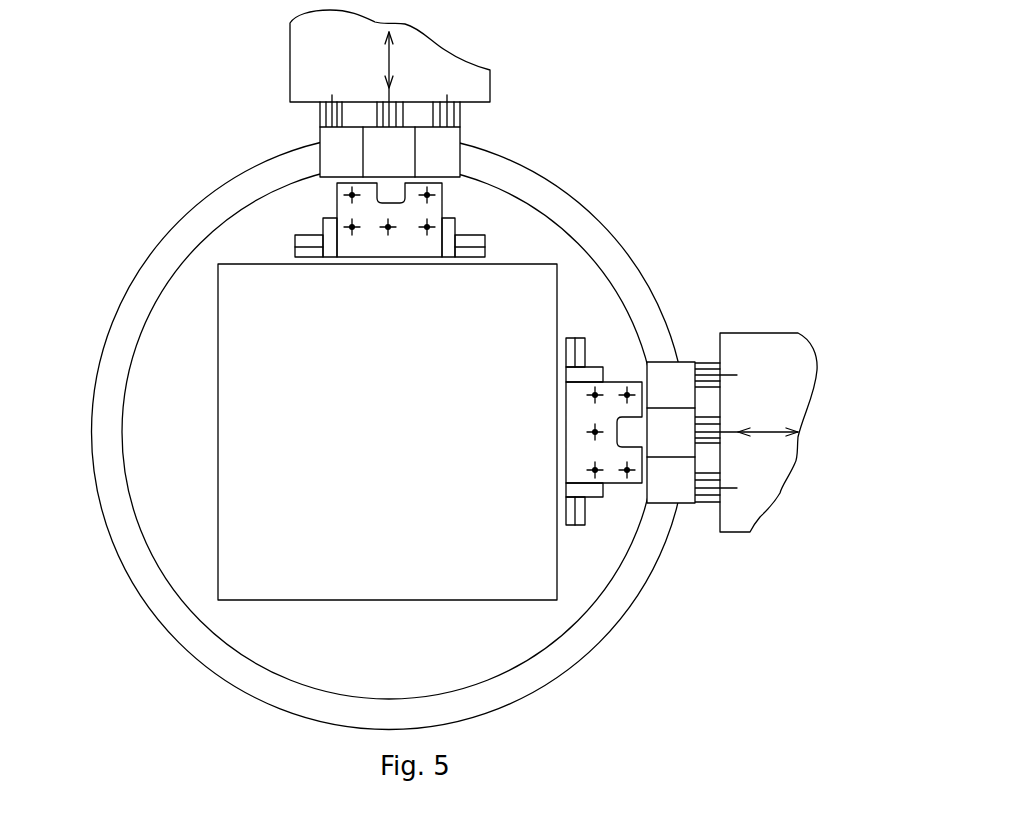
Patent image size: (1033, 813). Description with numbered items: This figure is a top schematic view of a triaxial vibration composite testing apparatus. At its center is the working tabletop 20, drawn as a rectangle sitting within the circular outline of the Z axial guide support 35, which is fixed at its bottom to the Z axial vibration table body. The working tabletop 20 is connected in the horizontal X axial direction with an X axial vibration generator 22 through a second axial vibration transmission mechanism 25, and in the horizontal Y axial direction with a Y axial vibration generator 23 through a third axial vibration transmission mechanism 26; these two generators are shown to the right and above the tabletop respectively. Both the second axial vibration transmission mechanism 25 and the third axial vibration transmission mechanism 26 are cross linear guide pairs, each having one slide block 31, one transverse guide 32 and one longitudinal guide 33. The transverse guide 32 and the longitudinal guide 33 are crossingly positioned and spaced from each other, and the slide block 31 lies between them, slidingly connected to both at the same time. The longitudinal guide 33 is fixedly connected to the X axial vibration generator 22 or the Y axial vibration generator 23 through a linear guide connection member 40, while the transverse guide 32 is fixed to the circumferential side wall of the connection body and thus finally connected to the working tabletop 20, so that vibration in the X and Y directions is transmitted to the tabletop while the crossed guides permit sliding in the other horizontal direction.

The working tabletop 20 is at (275, 360).
The X axial vibration generator 22 is at (740, 522).
The Y axial vibration generator 23 is at (305, 62).
The second axial vibration transmission mechanism 25 is at (622, 357).
The third axial vibration transmission mechanism 26 is at (473, 210).
The slide block 31 is at (340, 213).
The transverse guide 32 is at (305, 247).
The longitudinal guide 33 is at (330, 193).
The Z axial guide support 35 is at (180, 347).
The linear guide connection member 40 is at (440, 152).